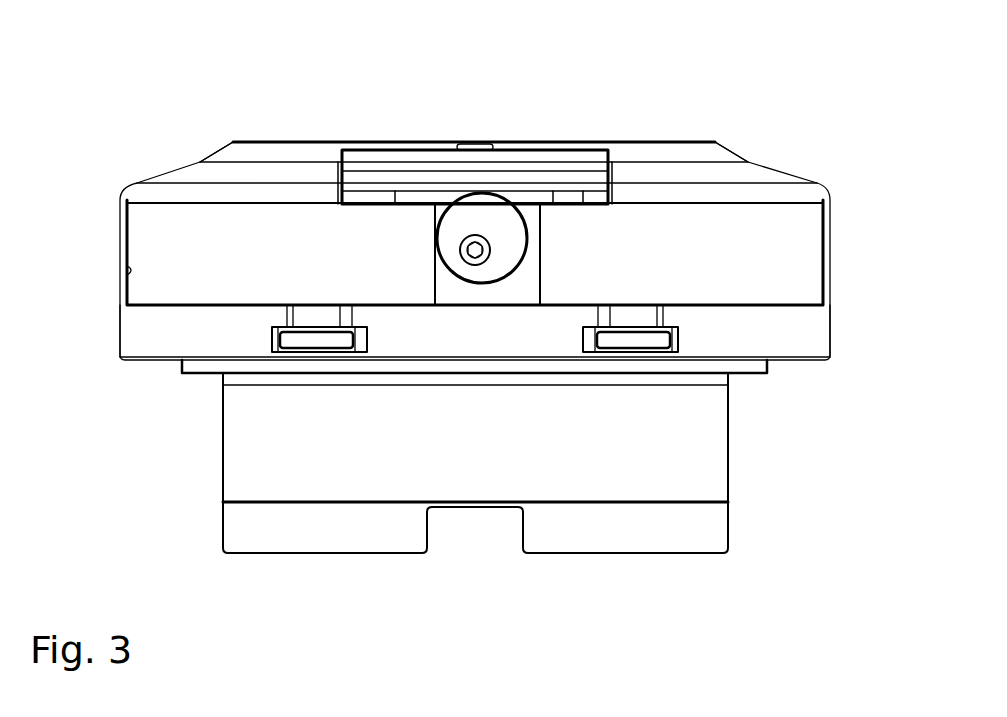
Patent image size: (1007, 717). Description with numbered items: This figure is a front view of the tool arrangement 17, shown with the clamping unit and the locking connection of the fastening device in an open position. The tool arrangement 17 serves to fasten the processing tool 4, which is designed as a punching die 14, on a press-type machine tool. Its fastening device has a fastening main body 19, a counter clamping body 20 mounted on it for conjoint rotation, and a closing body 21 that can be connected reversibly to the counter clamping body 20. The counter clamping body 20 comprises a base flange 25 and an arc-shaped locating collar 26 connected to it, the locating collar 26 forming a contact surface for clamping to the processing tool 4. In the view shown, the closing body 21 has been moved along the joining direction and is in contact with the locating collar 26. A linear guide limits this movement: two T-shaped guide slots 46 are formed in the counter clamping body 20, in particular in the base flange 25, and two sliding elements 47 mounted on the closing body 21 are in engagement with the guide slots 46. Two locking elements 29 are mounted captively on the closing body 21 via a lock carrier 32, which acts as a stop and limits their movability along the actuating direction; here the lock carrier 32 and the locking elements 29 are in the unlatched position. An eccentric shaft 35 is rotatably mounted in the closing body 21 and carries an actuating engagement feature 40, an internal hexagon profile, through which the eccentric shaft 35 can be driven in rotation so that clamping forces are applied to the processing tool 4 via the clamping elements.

The processing tool 4 is at (474, 93).
The punching die 14 is at (296, 148).
The tool arrangement 17 is at (660, 105).
The fastening main body 19 is at (725, 458).
The counter clamping body 20 is at (836, 243).
The closing body 21 is at (145, 240).
The base flange 25 is at (150, 326).
The locating collar 26 is at (128, 271).
The locking elements 29 is at (390, 195).
The lock carrier 32 is at (365, 165).
The eccentric shaft 35 is at (497, 196).
The actuating engagement feature 40 is at (476, 245).
The guide slots 46 is at (676, 355).
The sliding elements 47 is at (278, 340).